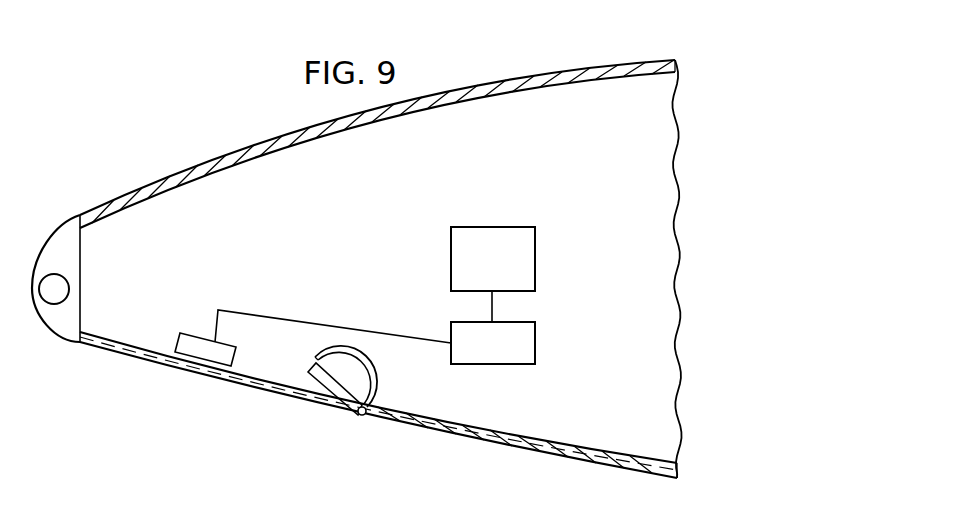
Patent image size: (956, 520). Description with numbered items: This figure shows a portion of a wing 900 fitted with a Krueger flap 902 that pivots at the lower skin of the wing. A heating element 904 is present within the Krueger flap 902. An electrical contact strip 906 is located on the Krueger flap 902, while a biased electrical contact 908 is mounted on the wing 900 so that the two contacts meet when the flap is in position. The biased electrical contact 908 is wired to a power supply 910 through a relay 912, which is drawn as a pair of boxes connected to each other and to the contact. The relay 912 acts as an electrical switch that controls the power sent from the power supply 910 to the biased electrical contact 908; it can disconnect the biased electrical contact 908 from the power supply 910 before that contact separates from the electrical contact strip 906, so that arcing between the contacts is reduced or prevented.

The wing 900 is at (580, 66).
The Krueger flap 902 is at (358, 391).
The heating element 904 is at (297, 397).
The electrical contact strip 906 is at (230, 368).
The biased electrical contact 908 is at (193, 342).
The power supply 910 is at (537, 255).
The relay 912 is at (537, 344).